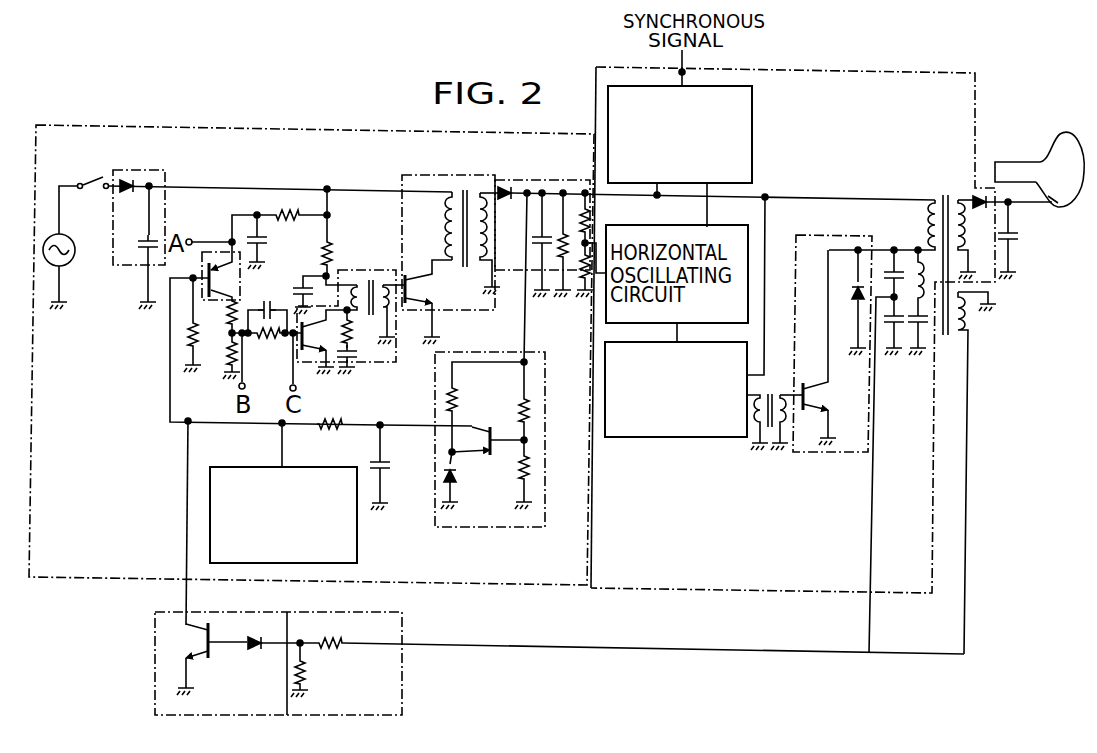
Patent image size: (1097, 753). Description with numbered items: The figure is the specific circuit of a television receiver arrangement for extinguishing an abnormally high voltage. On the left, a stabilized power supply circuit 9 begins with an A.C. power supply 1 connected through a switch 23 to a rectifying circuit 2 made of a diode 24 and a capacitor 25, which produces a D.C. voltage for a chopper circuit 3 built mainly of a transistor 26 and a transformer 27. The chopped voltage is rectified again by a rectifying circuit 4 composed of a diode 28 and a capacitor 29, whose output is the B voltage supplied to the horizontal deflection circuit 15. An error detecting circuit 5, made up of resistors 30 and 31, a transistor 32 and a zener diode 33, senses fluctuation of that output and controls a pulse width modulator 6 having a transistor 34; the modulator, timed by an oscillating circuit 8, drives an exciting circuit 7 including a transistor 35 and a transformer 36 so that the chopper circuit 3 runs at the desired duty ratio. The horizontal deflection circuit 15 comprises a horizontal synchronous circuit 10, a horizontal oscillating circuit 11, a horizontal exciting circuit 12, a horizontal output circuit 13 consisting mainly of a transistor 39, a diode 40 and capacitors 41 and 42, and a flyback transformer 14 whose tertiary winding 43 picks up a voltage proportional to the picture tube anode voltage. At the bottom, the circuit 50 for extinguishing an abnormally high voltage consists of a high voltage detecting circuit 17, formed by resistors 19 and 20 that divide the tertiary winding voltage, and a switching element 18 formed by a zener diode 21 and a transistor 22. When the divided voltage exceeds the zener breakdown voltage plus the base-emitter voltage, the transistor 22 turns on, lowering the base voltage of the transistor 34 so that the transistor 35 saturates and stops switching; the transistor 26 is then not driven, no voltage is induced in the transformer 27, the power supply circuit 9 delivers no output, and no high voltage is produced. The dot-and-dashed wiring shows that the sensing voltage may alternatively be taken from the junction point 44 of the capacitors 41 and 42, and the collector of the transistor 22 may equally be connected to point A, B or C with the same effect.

The A.C. power supply 1 is at (70, 264).
The rectifying circuit 2 is at (165, 185).
The chopper circuit 3 is at (433, 176).
The rectifying circuit 4 is at (533, 178).
The error detecting circuit 5 is at (465, 351).
The pulse width modulator 6 is at (242, 278).
The exciting circuit 7 is at (392, 366).
The oscillating circuit 8 is at (358, 520).
The stabilized power supply circuit 9 is at (186, 125).
The horizontal synchronous circuit 10 is at (753, 117).
The horizontal oscillating circuit 11 is at (715, 227).
The horizontal exciting circuit 12 is at (663, 438).
The horizontal output circuit 13 is at (807, 456).
The flyback transformer 14 is at (947, 198).
The horizontal deflection circuit 15 is at (905, 61).
The high voltage detecting circuit 17 is at (320, 716).
The switching element 18 is at (215, 715).
The resistor 19 is at (340, 633).
The resistor 20 is at (327, 662).
The zener diode 21 is at (262, 635).
The transistor 22 is at (200, 652).
The power switch 23 is at (100, 177).
The diode 24 is at (133, 177).
The capacitor 25 is at (146, 248).
The transistor 26 is at (421, 278).
The transformer 27 is at (467, 180).
The diode 28 is at (512, 184).
The capacitor 29 is at (548, 232).
The resistor 30 is at (532, 408).
The resistor 31 is at (530, 464).
The transistor 32 is at (483, 457).
The zener diode 33 is at (437, 478).
The transistor 34 is at (209, 262).
The transistor 35 is at (312, 346).
The transformer 36 is at (370, 280).
The transistor 39 is at (814, 347).
The diode 40 is at (847, 292).
The capacitor 41 is at (882, 258).
The capacitor 42 is at (882, 330).
The tertiary winding 43 is at (968, 316).
The junction point 44 is at (912, 250).
The circuit for extinguishing an abnormally high voltage 50 is at (155, 668).